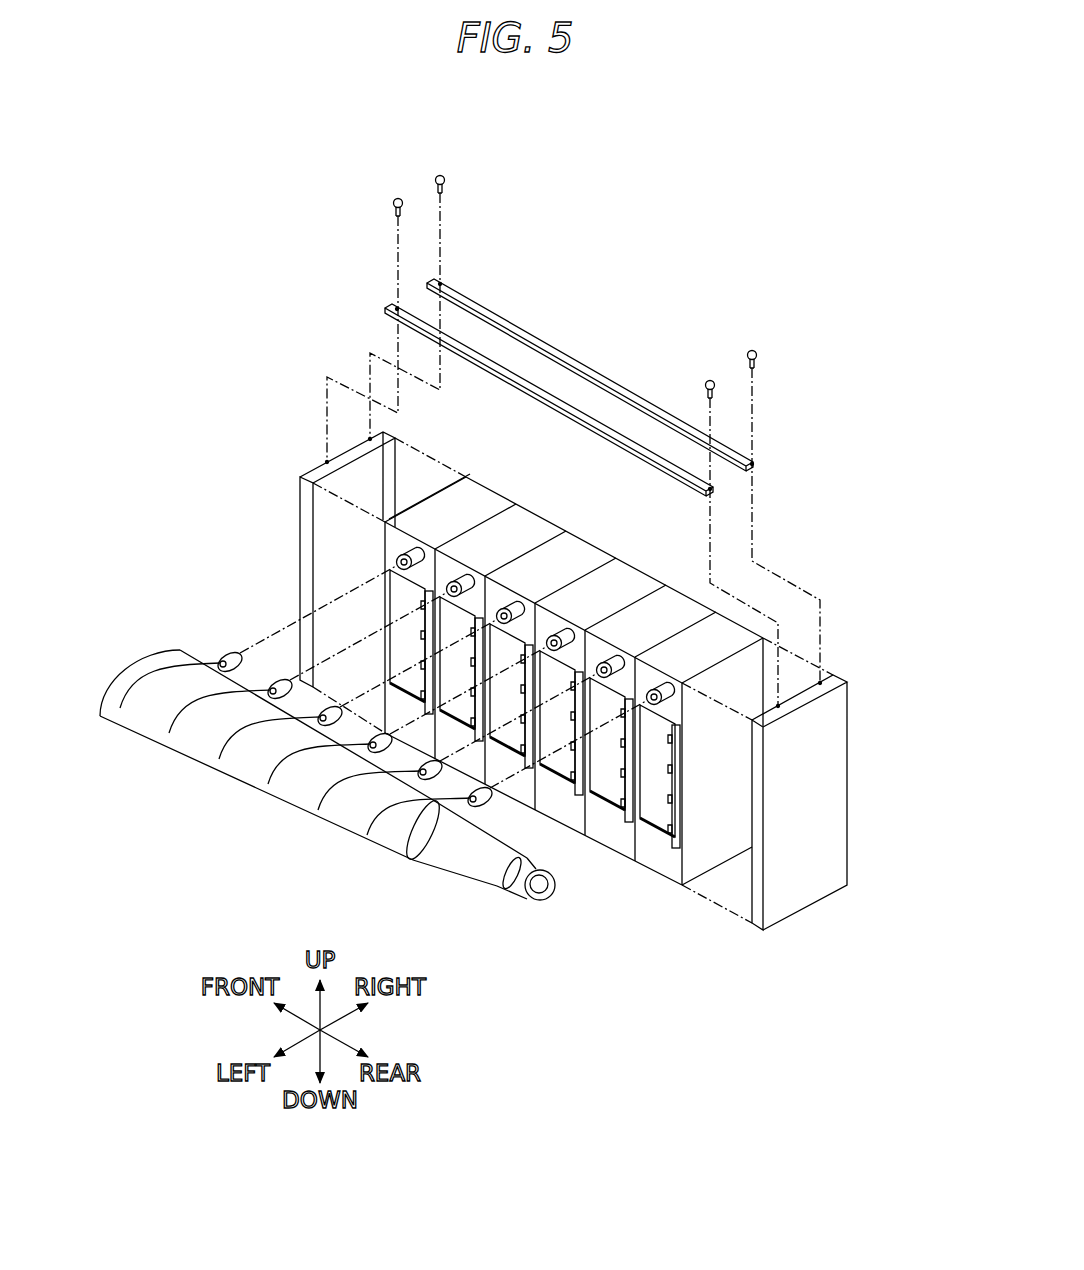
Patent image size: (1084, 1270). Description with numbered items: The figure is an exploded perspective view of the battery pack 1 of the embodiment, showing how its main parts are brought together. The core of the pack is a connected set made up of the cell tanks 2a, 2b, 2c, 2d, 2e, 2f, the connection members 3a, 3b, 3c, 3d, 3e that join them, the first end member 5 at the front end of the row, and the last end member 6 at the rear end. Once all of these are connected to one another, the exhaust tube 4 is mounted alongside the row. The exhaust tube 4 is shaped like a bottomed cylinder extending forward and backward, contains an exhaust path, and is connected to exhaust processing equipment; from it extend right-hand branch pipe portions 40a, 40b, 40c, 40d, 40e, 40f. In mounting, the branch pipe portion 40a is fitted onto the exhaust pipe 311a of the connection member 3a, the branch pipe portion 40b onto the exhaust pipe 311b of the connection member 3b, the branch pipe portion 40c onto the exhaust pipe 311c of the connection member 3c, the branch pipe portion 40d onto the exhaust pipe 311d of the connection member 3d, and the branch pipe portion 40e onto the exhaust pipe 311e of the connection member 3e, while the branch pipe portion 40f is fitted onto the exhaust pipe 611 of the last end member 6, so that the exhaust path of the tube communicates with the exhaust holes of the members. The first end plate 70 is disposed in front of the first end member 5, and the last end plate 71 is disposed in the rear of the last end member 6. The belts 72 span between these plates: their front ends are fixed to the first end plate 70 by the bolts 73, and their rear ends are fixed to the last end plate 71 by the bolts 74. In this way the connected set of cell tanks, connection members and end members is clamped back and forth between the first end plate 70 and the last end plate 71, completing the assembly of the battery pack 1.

The battery pack 1 is at (287, 316).
The cell tank 2a is at (408, 642).
The cell tank 2b is at (458, 669).
The cell tank 2c is at (508, 696).
The cell tank 2d is at (558, 723).
The cell tank 2e is at (608, 750).
The cell tank 2f is at (658, 777).
The connection member 3a is at (475, 512).
The connection member 3b is at (523, 537).
The connection member 3c is at (573, 563).
The connection member 3d is at (622, 590).
The connection member 3e is at (672, 613).
The exhaust tube 4 is at (402, 852).
The first end member 5 is at (421, 494).
The last end member 6 is at (730, 640).
The first end plate 70 is at (303, 500).
The last end plate 71 is at (835, 769).
The belts 72 is at (578, 352).
The bolts 73 is at (437, 176).
The bolts 74 is at (755, 352).
The exhaust pipe 311a is at (396, 557).
The exhaust pipe 311b is at (446, 585).
The exhaust pipe 311c is at (496, 612).
The exhaust pipe 311d is at (562, 640).
The exhaust pipe 311e is at (612, 668).
The exhaust pipe 611 is at (662, 694).
The branch pipe portion 40a is at (117, 709).
The branch pipe portion 40b is at (167, 734).
The branch pipe portion 40c is at (217, 760).
The branch pipe portion 40d is at (266, 785).
The branch pipe portion 40e is at (316, 811).
The branch pipe portion 40f is at (365, 836).